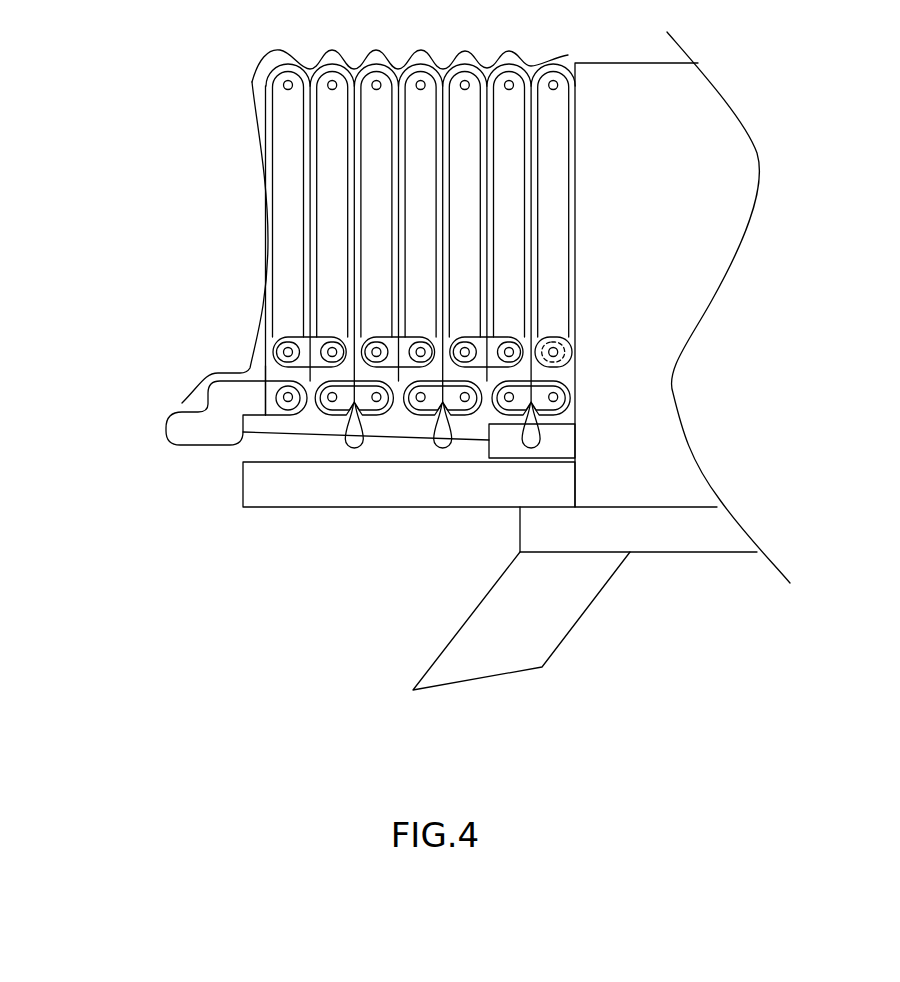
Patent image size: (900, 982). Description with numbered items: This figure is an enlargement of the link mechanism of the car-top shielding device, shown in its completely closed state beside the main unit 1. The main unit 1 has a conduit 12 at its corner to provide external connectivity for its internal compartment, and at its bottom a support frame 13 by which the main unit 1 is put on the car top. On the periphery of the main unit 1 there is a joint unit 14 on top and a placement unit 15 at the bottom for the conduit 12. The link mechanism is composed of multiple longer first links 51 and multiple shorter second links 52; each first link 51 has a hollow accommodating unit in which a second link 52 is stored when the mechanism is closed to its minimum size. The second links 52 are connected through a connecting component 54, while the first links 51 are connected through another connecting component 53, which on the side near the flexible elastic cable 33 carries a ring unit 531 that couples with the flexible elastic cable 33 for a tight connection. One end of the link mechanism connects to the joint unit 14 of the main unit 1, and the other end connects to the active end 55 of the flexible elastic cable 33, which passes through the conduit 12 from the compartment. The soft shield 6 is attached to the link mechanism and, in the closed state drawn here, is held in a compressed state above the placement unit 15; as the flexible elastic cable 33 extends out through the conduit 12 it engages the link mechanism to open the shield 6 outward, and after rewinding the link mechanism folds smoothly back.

The main unit 1 is at (667, 157).
The shield 6 is at (250, 82).
The conduit 12 is at (525, 440).
The support frame 13 is at (538, 615).
The joint unit 14 is at (573, 357).
The placement unit 15 is at (347, 493).
The flexible elastic cable 33 is at (292, 433).
The first link 51 is at (255, 375).
The second link 52 is at (289, 221).
The connecting component 53 is at (337, 402).
The ring unit 531 is at (354, 401).
The connecting component 54 is at (305, 340).
The active end 55 is at (197, 430).